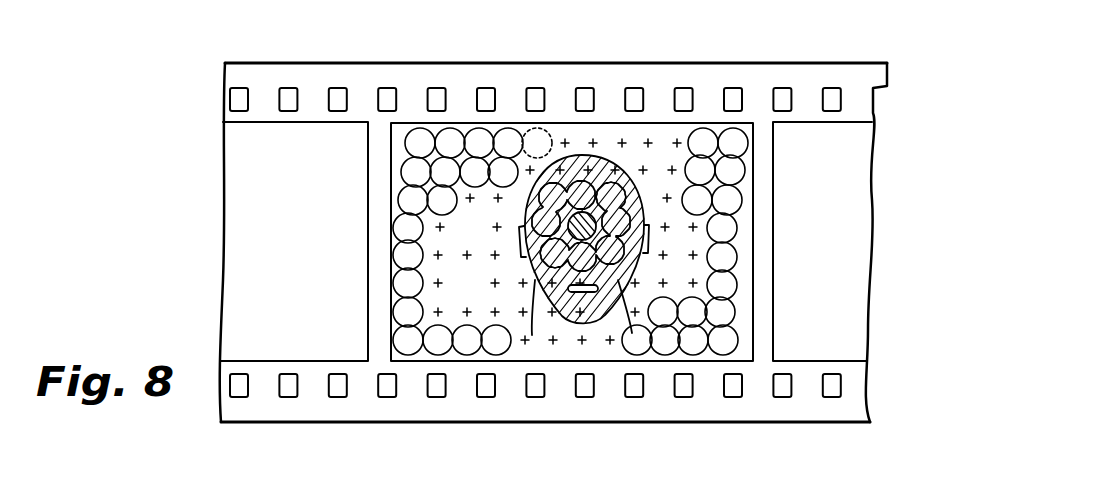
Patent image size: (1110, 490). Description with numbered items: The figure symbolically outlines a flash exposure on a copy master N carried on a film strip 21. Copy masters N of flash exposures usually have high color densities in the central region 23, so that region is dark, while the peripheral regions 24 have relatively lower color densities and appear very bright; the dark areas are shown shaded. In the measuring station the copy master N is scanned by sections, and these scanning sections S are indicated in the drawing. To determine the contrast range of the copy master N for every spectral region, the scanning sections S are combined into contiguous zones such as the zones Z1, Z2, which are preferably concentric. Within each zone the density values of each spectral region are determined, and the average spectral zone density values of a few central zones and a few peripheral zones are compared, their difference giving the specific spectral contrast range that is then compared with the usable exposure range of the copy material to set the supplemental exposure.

The photographic film strip 21 is at (553, 211).
The central region 23 is at (600, 163).
The peripheral regions 24 is at (580, 143).
The copy master N is at (869, 0).
The scanning sections S is at (727, 335).
The zone Z1 is at (577, 228).
The zone Z2 is at (543, 197).